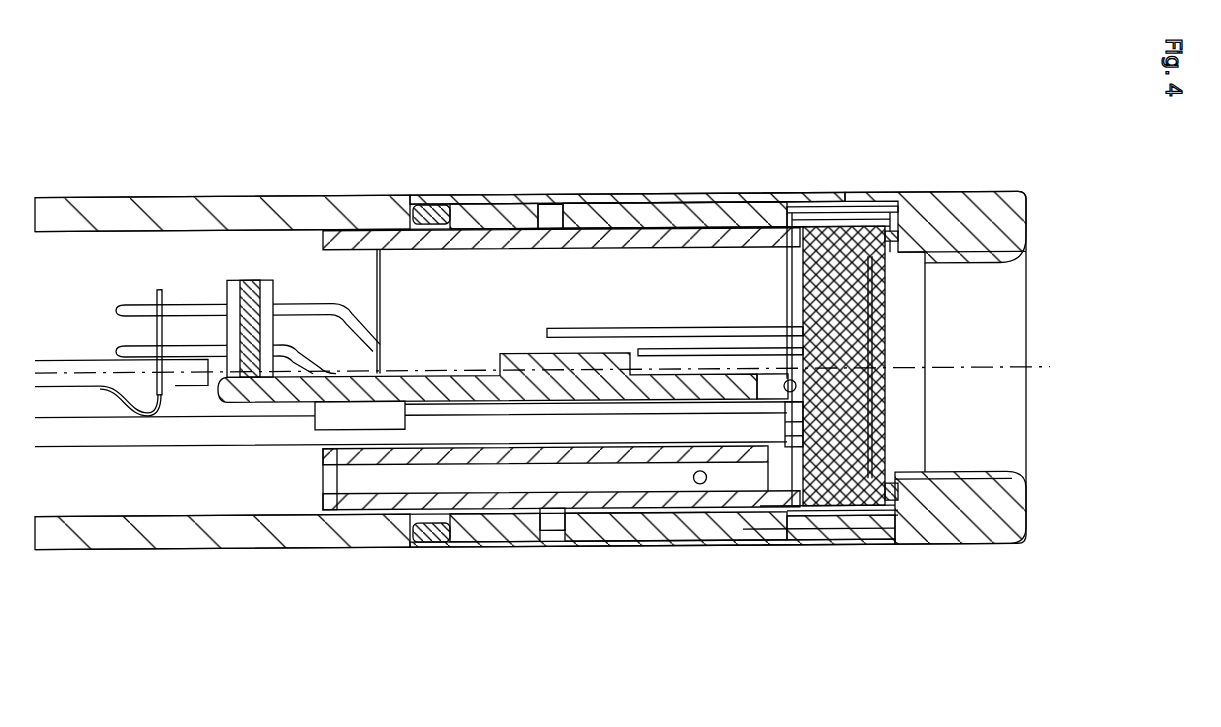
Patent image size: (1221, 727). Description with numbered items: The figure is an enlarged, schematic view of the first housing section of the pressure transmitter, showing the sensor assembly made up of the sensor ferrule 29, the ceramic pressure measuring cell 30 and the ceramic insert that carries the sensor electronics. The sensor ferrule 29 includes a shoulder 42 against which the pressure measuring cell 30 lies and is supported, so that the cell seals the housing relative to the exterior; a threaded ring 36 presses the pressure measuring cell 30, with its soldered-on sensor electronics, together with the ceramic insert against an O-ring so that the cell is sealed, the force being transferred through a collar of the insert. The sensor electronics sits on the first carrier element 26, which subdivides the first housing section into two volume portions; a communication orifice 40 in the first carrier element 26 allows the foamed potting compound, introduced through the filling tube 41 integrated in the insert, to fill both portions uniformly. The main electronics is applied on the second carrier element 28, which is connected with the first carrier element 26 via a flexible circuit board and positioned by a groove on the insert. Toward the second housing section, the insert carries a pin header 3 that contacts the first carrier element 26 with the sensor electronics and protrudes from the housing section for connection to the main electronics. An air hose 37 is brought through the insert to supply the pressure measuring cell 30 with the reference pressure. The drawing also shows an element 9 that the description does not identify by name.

The pin header 3 is at (190, 302).
The sealing ring 9 is at (435, 541).
The first carrier element 26 is at (482, 375).
The second carrier element 28 is at (70, 357).
The sensor ferrule 29 is at (1001, 522).
The pressure measuring cell 30 is at (815, 480).
The threaded ring 36 is at (636, 214).
The air hose 37 is at (112, 433).
The communication orifice 40 is at (788, 208).
The filling tube 41 is at (700, 485).
The shoulder 42 is at (913, 237).